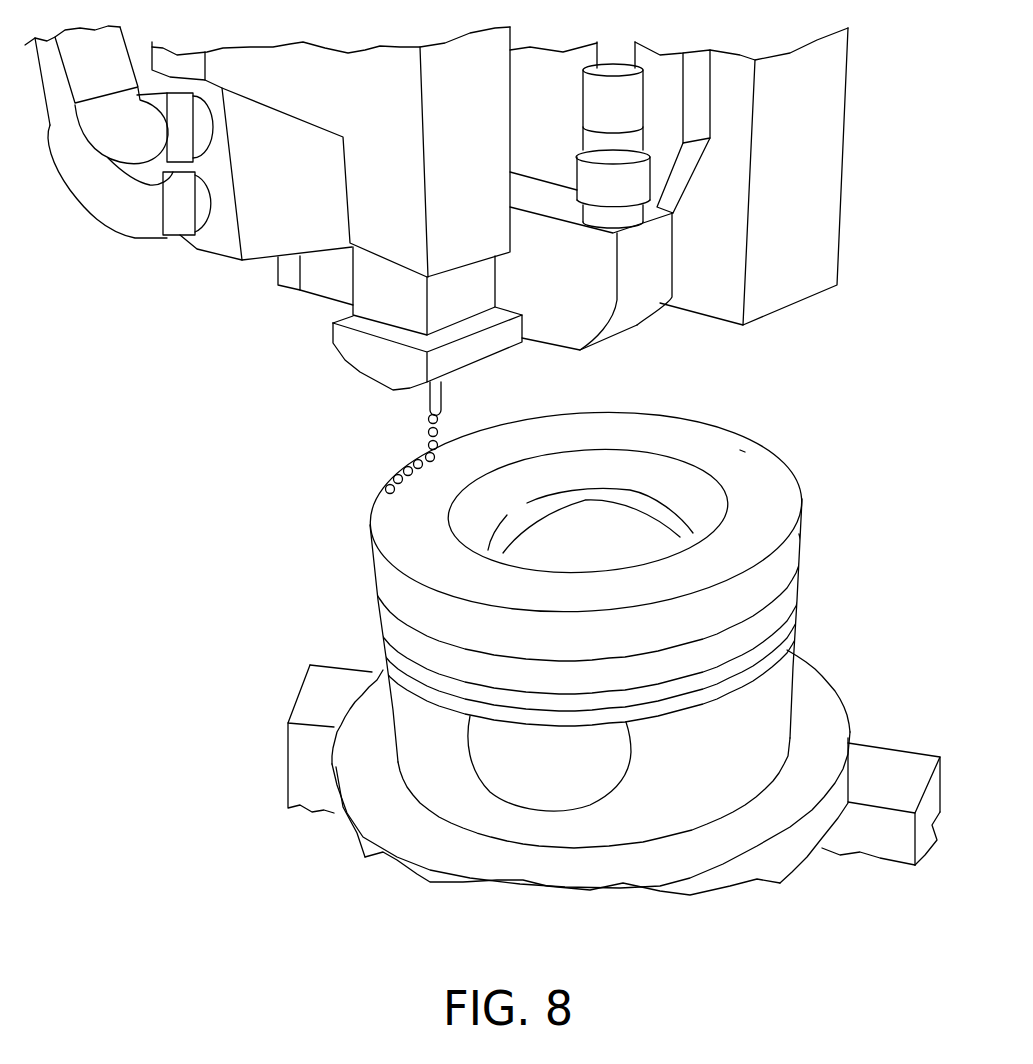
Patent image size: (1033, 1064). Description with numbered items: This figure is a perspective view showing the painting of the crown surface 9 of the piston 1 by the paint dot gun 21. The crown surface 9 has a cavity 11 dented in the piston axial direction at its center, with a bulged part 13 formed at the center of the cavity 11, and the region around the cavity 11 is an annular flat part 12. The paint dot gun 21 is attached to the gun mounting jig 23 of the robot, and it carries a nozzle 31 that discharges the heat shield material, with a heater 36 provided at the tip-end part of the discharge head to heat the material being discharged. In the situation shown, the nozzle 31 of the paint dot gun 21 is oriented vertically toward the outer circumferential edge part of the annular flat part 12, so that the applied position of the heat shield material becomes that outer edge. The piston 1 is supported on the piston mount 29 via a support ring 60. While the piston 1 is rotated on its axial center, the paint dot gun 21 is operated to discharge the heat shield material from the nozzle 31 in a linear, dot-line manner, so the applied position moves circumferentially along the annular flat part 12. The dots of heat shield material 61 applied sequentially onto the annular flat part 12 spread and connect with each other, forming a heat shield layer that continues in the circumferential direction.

The piston 1 is at (629, 603).
The crown surface 9 is at (802, 480).
The cavity 11 is at (592, 470).
The annular flat part 12 is at (737, 453).
The bulged part 13 is at (600, 513).
The paint dot gun 21 is at (235, 283).
The gun mounting jig 23 is at (817, 155).
The piston mount 29 is at (297, 690).
The nozzle 31 is at (430, 398).
The heater 36 is at (355, 348).
The support ring 60 is at (820, 697).
The heat shield material 61 is at (425, 432).